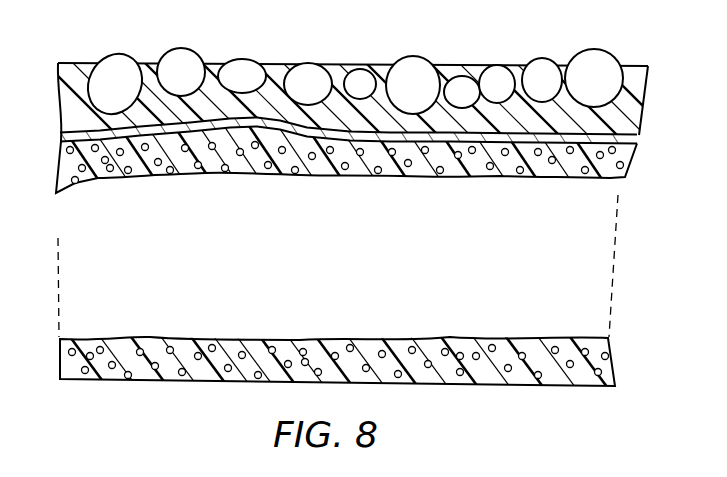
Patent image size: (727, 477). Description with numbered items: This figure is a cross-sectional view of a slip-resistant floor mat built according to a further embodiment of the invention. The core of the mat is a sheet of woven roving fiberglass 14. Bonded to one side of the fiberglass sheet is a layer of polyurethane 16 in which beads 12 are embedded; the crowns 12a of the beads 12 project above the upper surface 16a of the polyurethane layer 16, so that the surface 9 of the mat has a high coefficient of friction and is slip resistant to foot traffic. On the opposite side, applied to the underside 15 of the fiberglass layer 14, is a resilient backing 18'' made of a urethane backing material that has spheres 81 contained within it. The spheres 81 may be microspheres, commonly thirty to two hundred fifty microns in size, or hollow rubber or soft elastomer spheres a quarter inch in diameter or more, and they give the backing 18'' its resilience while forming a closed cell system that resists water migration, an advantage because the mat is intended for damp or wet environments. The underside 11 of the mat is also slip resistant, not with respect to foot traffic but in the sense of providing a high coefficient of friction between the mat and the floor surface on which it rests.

The surface 9 is at (112, 38).
The underside 11 is at (532, 388).
The beads 12 is at (317, 70).
The crowns 12a is at (585, 56).
The sheet of woven roving fiberglass 14 is at (638, 144).
The underside of fiberglass layer 15 is at (618, 181).
The layer of polyurethane 16 is at (60, 101).
The upper surface of the polyurethane layer 16a is at (628, 67).
The resilient backing 18'' is at (322, 260).
The spheres 81 is at (303, 170).